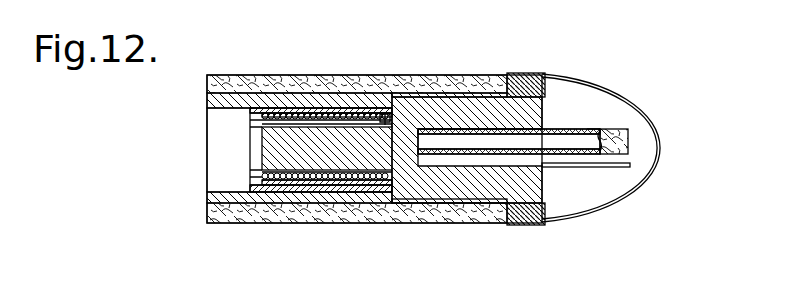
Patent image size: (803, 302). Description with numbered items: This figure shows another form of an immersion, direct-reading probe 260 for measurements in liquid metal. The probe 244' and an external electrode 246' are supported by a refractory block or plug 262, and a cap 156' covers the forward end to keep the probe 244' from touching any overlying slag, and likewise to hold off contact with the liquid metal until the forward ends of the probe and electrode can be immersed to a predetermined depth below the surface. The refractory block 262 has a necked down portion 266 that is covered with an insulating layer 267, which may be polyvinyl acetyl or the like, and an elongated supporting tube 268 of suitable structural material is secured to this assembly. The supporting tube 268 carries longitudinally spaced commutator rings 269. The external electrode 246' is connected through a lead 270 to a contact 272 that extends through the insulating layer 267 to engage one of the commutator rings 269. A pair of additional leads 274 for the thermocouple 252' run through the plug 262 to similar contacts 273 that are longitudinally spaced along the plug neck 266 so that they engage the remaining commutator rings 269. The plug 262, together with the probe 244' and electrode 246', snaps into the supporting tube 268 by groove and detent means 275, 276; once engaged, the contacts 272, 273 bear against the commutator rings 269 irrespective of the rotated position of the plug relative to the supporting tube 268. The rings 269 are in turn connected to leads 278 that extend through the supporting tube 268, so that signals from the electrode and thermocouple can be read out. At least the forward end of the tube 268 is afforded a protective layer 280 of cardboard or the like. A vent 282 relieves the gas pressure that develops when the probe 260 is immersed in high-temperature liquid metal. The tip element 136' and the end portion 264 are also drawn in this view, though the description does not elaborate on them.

The supporting tube 268 is at (210, 90).
The protective layer 280 is at (247, 212).
The probe 260 is at (487, 75).
The leads 278 is at (250, 117).
The necked down portion 266 is at (262, 145).
The commutator rings 269 is at (278, 118).
The contacts 273 is at (310, 118).
The groove and detent means 275 is at (400, 118).
The groove and detent means 276 is at (411, 118).
The vent 282 is at (417, 112).
The insulating layer 267 is at (264, 182).
The contact 272 is at (330, 178).
The lead 270 is at (406, 167).
The additional leads 274 is at (476, 145).
The end cap upper portion 264 is at (545, 85).
The refractory block 262 is at (548, 212).
The tip element 136' is at (659, 141).
The thermocouple 252' is at (656, 129).
The external electrode 246' is at (619, 183).
The cap 156' is at (619, 148).
The probe 244' is at (622, 101).